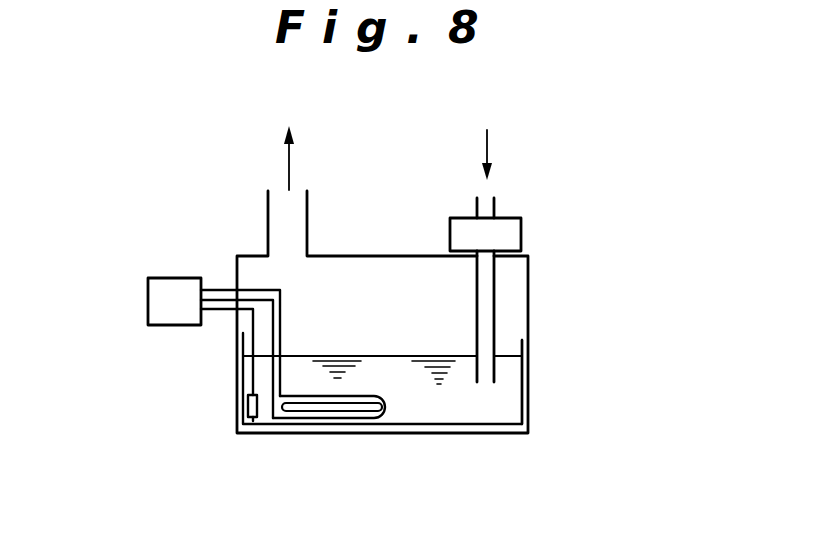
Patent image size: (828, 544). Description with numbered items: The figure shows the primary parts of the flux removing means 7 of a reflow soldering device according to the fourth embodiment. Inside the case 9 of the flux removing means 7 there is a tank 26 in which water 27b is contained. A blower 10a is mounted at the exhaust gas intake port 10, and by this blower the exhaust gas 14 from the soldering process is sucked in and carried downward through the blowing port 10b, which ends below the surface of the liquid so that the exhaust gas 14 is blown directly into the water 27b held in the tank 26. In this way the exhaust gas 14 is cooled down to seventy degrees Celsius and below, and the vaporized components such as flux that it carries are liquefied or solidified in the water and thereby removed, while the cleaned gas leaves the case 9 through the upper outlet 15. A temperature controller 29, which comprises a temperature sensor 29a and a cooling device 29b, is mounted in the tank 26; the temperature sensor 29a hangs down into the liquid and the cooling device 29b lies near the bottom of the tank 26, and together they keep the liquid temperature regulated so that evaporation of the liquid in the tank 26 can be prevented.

The flux removing means 7 is at (528, 258).
The case 9 is at (528, 329).
The exhaust gas intake port 10 is at (497, 205).
The blower 10a is at (522, 236).
The blowing port 10b is at (497, 284).
The exhaust gas 14 is at (490, 147).
The gas exhaust 15 is at (288, 167).
The tank 26 is at (523, 372).
The water 27b is at (493, 408).
The temperature controller 29 is at (147, 308).
The temperature sensor 29a is at (247, 408).
The cooling device 29b is at (328, 419).